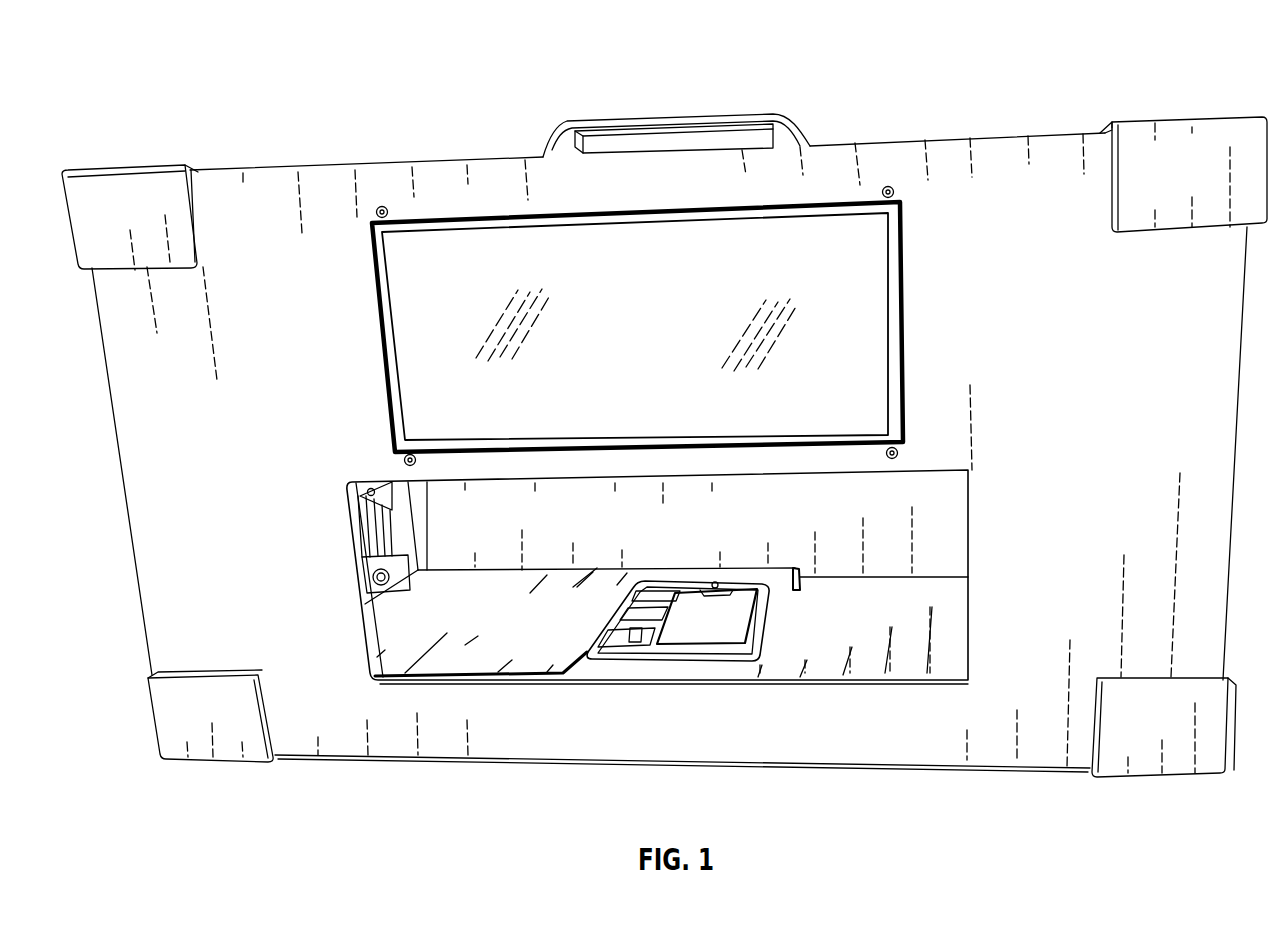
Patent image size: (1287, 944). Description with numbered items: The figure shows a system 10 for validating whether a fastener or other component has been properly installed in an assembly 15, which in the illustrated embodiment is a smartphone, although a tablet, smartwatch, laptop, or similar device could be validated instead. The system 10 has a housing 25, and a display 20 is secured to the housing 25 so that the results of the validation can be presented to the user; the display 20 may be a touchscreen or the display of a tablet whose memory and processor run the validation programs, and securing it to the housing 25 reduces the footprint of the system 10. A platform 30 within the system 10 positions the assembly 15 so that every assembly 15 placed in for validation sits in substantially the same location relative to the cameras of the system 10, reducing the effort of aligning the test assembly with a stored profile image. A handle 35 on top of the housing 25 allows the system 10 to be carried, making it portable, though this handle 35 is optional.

The system 10 is at (97, 80).
The assembly 15 is at (735, 661).
The display 20 is at (408, 328).
The housing 25 is at (1069, 182).
The platform 30 is at (465, 655).
The handle 35 is at (723, 117).